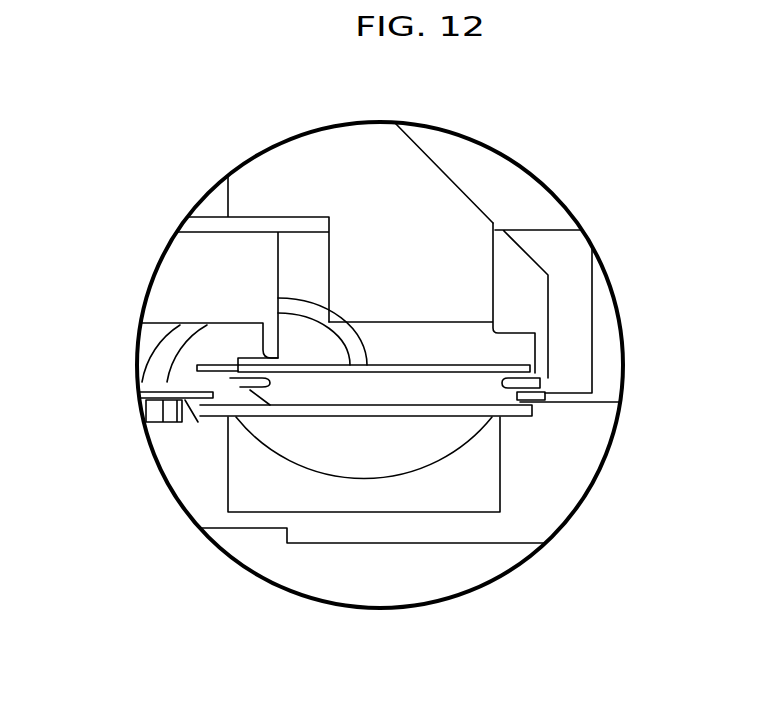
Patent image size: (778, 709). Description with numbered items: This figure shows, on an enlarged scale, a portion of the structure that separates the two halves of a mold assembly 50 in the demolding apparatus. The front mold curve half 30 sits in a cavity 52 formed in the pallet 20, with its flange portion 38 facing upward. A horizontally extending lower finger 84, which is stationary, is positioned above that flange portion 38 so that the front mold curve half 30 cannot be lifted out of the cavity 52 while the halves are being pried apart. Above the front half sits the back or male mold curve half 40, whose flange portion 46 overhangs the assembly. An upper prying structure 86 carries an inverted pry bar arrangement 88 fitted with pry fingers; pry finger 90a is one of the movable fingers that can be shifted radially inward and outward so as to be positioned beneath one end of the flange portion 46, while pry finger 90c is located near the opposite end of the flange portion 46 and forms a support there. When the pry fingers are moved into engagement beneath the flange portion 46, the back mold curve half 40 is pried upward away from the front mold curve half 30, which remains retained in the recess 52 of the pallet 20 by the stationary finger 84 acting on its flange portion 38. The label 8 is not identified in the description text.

The upper prying structure 86 is at (508, 183).
The inverted pry bar arrangement 88 is at (153, 285).
The back mold curve half 40 is at (445, 382).
The flange portion 46 is at (518, 358).
The mold assembly 50 is at (388, 401).
The pry finger 90a is at (235, 380).
The pry finger 90c is at (533, 388).
The frame channel 8 is at (545, 402).
The flange portion 38 is at (513, 416).
The front mold curve half 30 is at (275, 452).
The lower finger 84 is at (183, 422).
The pallet 20 is at (183, 497).
The cavity 52 is at (468, 497).